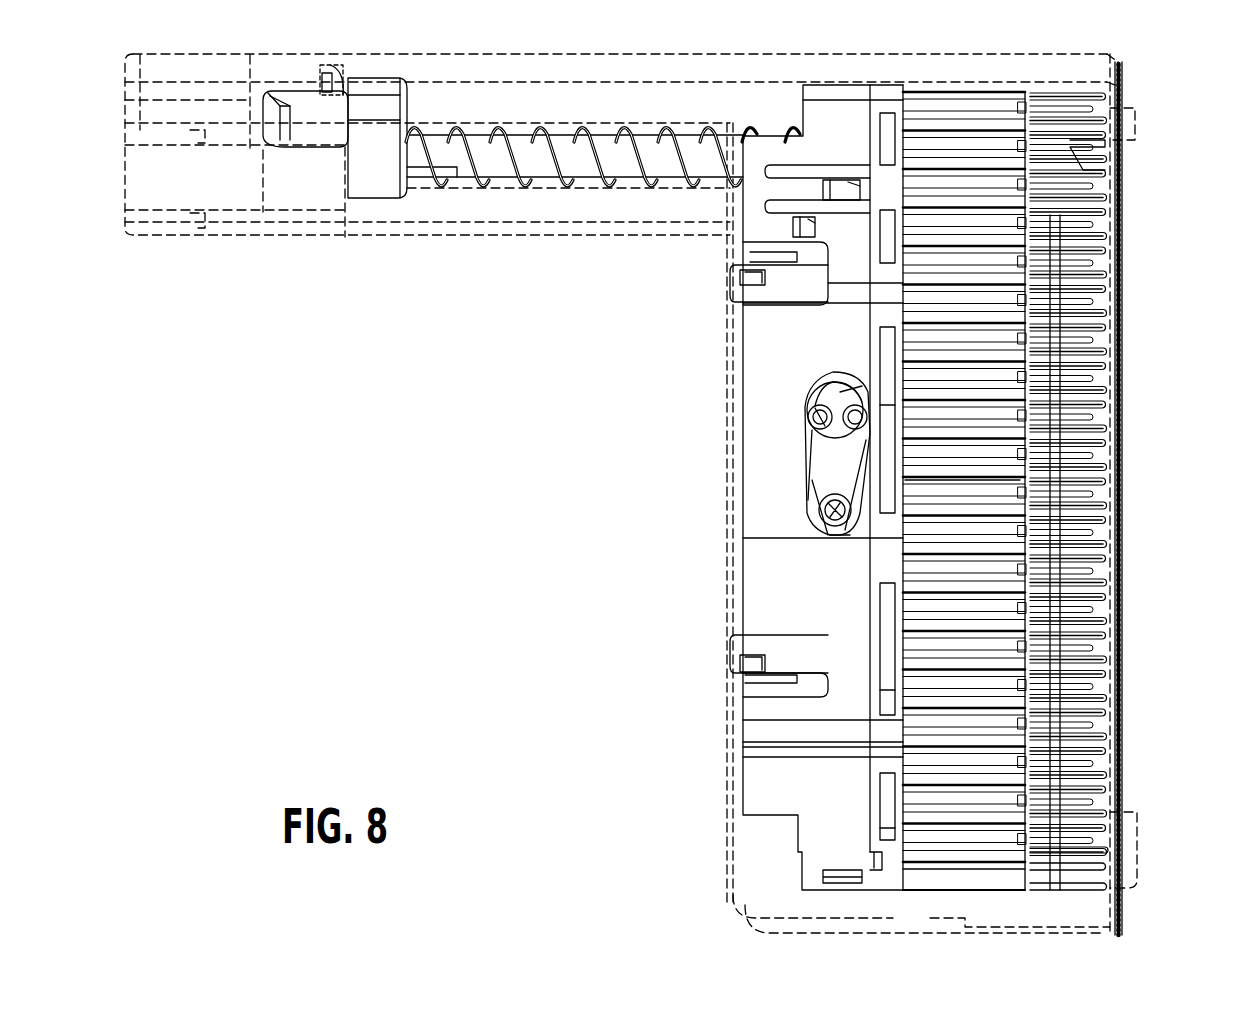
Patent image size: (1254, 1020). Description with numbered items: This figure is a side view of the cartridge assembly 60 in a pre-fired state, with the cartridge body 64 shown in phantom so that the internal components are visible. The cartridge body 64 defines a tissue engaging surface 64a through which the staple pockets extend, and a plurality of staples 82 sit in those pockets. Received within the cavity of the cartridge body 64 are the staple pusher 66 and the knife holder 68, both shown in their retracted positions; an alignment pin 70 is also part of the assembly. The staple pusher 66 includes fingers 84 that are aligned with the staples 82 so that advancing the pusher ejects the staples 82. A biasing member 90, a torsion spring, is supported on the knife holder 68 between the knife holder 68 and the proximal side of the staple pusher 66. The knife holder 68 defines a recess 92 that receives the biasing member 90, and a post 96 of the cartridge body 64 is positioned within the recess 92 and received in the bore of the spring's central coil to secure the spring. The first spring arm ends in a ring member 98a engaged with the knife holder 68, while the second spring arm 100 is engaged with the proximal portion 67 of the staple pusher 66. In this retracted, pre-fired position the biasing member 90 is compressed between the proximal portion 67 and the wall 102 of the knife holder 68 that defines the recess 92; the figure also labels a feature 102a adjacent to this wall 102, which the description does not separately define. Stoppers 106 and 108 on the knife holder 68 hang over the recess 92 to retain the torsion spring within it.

The cartridge assembly 60 is at (1133, 58).
The cartridge body 64 is at (884, 40).
The tissue engaging surface 64a is at (1124, 573).
The staple pusher 66 is at (974, 78).
The proximal portion of the staple pusher 67 is at (860, 337).
The knife holder 68 is at (827, 76).
The alignment pin 70 is at (603, 130).
The staples 82 is at (1095, 815).
The fingers 84 is at (970, 867).
The biasing member 90 is at (793, 478).
The recess 92 is at (825, 380).
The post 96 is at (822, 516).
The ring member 98a is at (808, 418).
The second spring arm 100 is at (867, 447).
The wall 102 is at (833, 508).
The pivot axis 102a is at (853, 390).
The stopper 106 is at (818, 445).
The stopper 108 is at (848, 535).